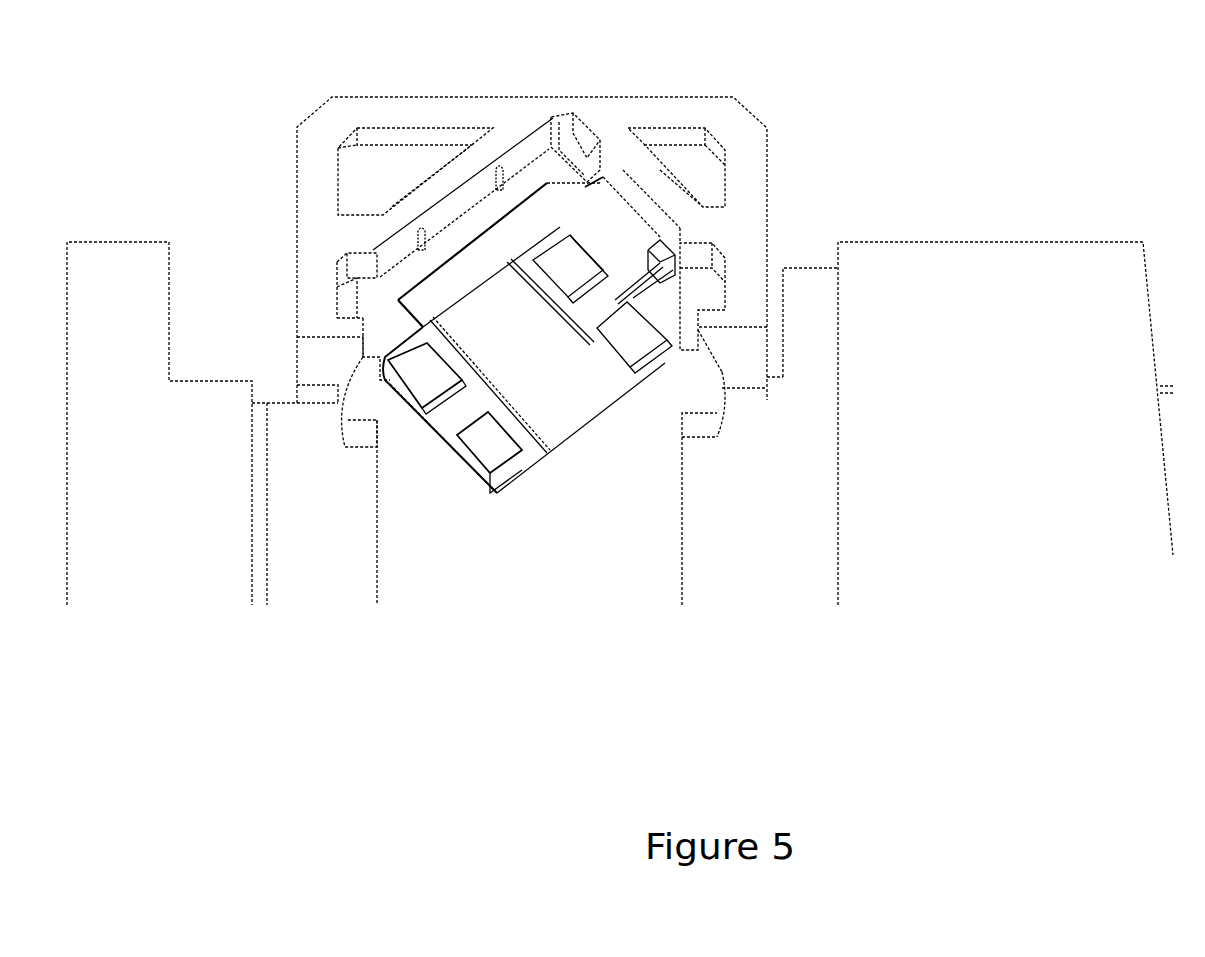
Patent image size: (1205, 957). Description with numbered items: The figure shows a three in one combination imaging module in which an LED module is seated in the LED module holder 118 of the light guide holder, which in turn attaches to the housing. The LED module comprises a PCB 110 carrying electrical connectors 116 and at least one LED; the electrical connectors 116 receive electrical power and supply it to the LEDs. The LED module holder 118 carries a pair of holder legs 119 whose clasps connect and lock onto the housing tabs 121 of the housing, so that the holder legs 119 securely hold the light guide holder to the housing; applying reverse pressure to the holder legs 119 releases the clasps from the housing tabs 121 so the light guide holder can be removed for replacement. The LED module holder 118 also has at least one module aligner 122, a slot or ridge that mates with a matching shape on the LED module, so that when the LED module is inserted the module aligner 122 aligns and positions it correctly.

The PCB 110 is at (626, 367).
The electrical connectors 116 is at (571, 466).
The LED module holder 118 is at (650, 328).
The holder legs 119 is at (850, 396).
The housing tabs 121 is at (817, 488).
The module aligner 122 is at (570, 150).